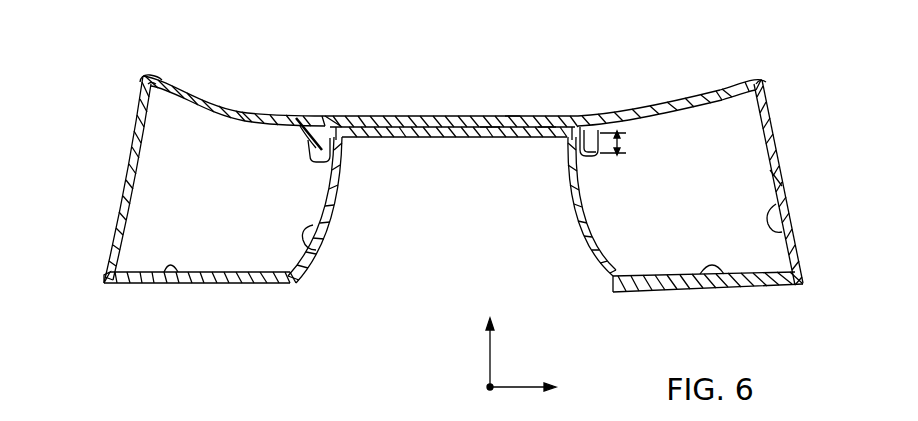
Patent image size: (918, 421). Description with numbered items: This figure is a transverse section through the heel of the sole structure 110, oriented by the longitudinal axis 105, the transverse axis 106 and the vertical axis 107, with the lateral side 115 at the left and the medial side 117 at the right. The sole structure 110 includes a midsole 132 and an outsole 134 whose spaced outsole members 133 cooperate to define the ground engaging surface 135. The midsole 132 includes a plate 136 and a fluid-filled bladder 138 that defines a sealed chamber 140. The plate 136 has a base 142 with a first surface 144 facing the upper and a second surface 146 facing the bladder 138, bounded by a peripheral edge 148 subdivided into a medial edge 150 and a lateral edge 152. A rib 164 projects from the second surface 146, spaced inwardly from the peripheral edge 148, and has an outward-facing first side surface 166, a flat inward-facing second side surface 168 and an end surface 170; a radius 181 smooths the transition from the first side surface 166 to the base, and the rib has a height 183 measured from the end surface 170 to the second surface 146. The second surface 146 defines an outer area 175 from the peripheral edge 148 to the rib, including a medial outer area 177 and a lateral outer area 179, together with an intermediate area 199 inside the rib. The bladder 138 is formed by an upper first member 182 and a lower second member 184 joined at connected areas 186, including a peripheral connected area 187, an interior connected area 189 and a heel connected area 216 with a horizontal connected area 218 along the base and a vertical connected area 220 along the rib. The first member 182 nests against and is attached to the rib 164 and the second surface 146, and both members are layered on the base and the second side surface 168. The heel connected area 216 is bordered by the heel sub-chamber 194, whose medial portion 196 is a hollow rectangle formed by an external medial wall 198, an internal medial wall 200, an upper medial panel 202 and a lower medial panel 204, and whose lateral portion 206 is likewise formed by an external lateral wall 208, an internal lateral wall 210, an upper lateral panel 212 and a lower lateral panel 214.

The longitudinal axis 105 is at (466, 387).
The transverse axis 106 is at (540, 387).
The vertical axis 107 is at (490, 338).
The sole structure 110 is at (118, 73).
The lateral side 115 is at (127, 175).
The medial side 117 is at (778, 142).
The midsole 132 is at (108, 287).
The outsole members 133 is at (272, 290).
The outsole 134 is at (772, 96).
The ground engaging surface 135 is at (187, 286).
The plate 136 is at (626, 114).
The fluid-filled bladder 138 is at (775, 118).
The chamber 140 is at (790, 206).
The base 142 is at (458, 120).
The first surface 144 is at (523, 118).
The second surface 146 is at (545, 132).
The peripheral edge 148 is at (142, 76).
The medial edge 150 is at (766, 78).
The lateral edge 152 is at (140, 82).
The rib 164 is at (312, 150).
The first side surface 166 is at (303, 140).
The second side surface 168 is at (338, 138).
The end surface 170 is at (323, 175).
The outer area 175 is at (195, 110).
The medial outer area 177 is at (700, 128).
The lateral outer area 179 is at (236, 128).
The radius 181 is at (598, 152).
The first member 182 is at (266, 110).
The height 183 is at (626, 143).
The second member 184 is at (236, 286).
The connected areas 186 is at (430, 135).
The peripheral connected area 187 is at (106, 270).
The interior connected area 189 is at (490, 132).
The heel sub-chamber 194 is at (322, 234).
The medial portion 196 is at (685, 196).
The external medial wall 198 is at (784, 180).
The intermediate area 199 is at (512, 130).
The internal medial wall 200 is at (567, 212).
The upper medial panel 202 is at (694, 115).
The lower medial panel 204 is at (724, 286).
The lateral portion 206 is at (205, 213).
The external lateral wall 208 is at (128, 152).
The internal lateral wall 210 is at (342, 190).
The upper lateral panel 212 is at (218, 108).
The lower lateral panel 214 is at (172, 268).
The heel connected area 216 is at (470, 135).
The horizontal connected area 218 is at (402, 125).
The vertical connected area 220 is at (340, 150).